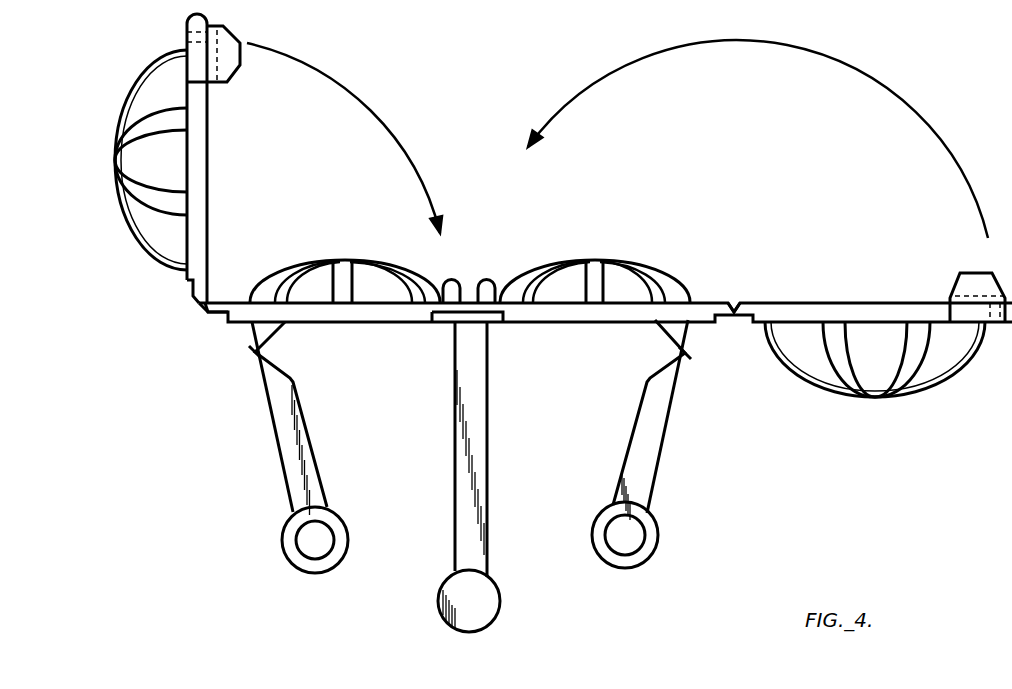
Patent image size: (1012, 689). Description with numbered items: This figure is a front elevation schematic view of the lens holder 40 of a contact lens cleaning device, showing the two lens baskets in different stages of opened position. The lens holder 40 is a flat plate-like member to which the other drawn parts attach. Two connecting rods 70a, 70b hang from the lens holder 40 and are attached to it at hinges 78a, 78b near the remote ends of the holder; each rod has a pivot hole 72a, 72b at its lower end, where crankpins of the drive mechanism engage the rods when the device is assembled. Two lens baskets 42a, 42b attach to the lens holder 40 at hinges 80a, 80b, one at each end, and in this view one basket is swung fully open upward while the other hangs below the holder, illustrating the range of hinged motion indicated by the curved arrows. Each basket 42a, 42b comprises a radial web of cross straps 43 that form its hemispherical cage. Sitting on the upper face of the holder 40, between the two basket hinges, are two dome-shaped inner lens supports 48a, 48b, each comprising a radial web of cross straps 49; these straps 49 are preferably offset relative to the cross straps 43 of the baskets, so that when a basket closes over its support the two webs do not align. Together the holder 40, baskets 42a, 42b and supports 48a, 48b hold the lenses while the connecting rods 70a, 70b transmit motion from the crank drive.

The lens holder 40 is at (137, 331).
The lens basket 42a is at (112, 158).
The lens basket 42b is at (878, 397).
The cross straps 43 is at (152, 70).
The inner lens support 48a is at (338, 262).
The inner lens support 48b is at (600, 262).
The cross straps 49 is at (290, 276).
The connecting rod 70a is at (279, 448).
The connecting rod 70b is at (663, 440).
The pivot hole 72a is at (300, 552).
The pivot hole 72b is at (640, 545).
The hinge 78a is at (255, 352).
The hinge 78b is at (687, 353).
The hinge 80a is at (205, 303).
The hinge 80b is at (737, 305).